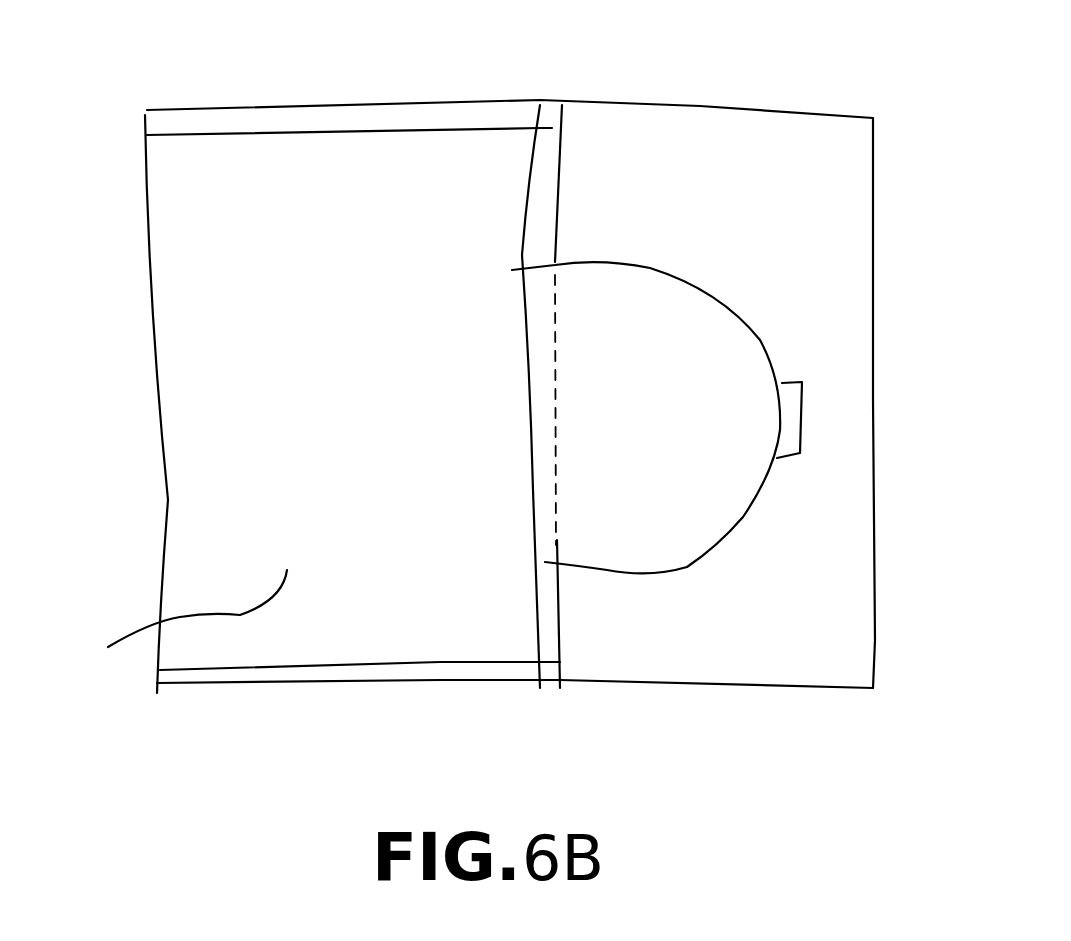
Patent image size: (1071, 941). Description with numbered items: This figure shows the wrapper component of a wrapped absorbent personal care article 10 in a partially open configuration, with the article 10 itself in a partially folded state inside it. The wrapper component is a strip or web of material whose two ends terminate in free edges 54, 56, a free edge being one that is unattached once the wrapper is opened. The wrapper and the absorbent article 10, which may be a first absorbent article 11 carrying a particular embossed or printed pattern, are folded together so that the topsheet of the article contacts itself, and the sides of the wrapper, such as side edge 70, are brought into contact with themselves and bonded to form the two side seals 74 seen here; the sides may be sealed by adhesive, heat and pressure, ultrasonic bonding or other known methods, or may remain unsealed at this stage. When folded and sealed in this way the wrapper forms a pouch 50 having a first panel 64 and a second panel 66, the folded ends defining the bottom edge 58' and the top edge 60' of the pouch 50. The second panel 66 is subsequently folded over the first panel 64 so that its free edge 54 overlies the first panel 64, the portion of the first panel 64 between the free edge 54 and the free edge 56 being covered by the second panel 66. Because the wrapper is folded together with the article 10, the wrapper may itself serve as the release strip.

The first absorbent article 11 is at (745, 107).
The absorbent personal care article 10 is at (740, 310).
The pouch 50 is at (174, 622).
The free edge 54 is at (873, 443).
The free edge 56 is at (521, 238).
The bottom edge 58' is at (120, 405).
The top edge 60' is at (600, 289).
The first panel 64 is at (287, 447).
The second panel 66 is at (590, 138).
The side edge 70 is at (263, 107).
The side seal 74 is at (338, 113).